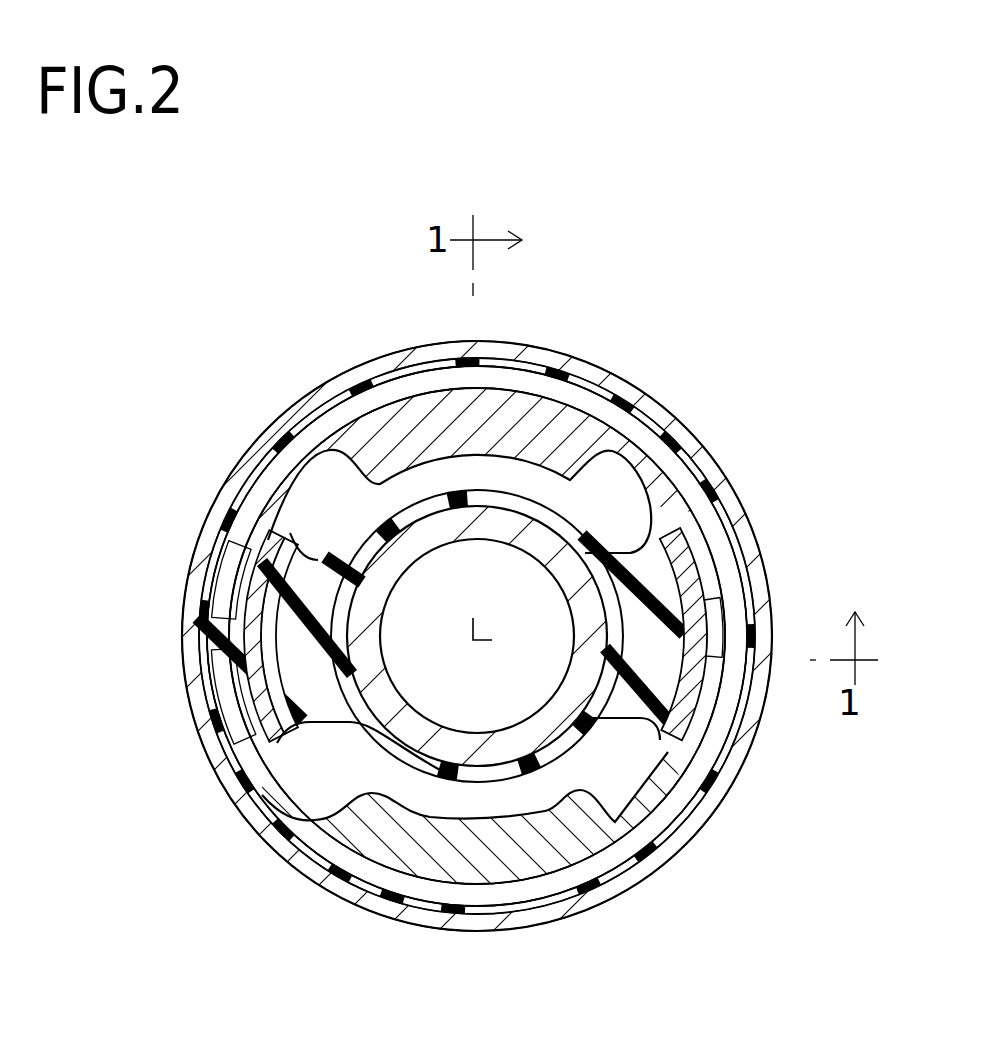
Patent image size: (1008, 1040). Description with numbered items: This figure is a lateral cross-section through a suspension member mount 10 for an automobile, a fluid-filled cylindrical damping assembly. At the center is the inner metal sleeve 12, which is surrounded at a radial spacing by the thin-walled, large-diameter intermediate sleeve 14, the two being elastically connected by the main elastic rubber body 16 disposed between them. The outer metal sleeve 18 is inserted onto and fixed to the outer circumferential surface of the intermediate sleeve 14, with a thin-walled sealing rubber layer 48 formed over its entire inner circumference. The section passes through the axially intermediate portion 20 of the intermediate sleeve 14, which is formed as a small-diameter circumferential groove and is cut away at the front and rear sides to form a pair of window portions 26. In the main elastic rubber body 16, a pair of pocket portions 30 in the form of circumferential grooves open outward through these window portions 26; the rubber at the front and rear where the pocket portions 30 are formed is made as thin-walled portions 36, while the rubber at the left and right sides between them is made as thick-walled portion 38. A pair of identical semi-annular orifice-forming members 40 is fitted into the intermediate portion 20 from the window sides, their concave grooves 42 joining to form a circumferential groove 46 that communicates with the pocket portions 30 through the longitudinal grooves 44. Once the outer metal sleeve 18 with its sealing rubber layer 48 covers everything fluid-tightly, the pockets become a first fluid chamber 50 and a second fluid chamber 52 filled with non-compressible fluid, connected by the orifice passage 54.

The suspension member mount 10 is at (652, 302).
The inner metal sleeve 12 is at (506, 778).
The intermediate sleeve 14 is at (708, 690).
The main elastic rubber body 16 is at (613, 735).
The outer metal sleeve 18 is at (183, 545).
The intermediate portion 20 is at (712, 608).
The window portions 26 is at (300, 520).
The pocket portions 30 is at (710, 515).
The thin-walled portions 36 is at (240, 608).
The thick-walled portion 38 is at (330, 697).
The orifice-forming members 40 is at (288, 441).
The concave grooves 42 is at (623, 403).
The longitudinal groove 44 is at (430, 392).
The circumferential groove 46 is at (477, 636).
The sealing rubber layer 48 is at (284, 864).
The first fluid chamber 50 is at (345, 490).
The second fluid chamber 52 is at (410, 790).
The orifice passage 54 is at (707, 518).